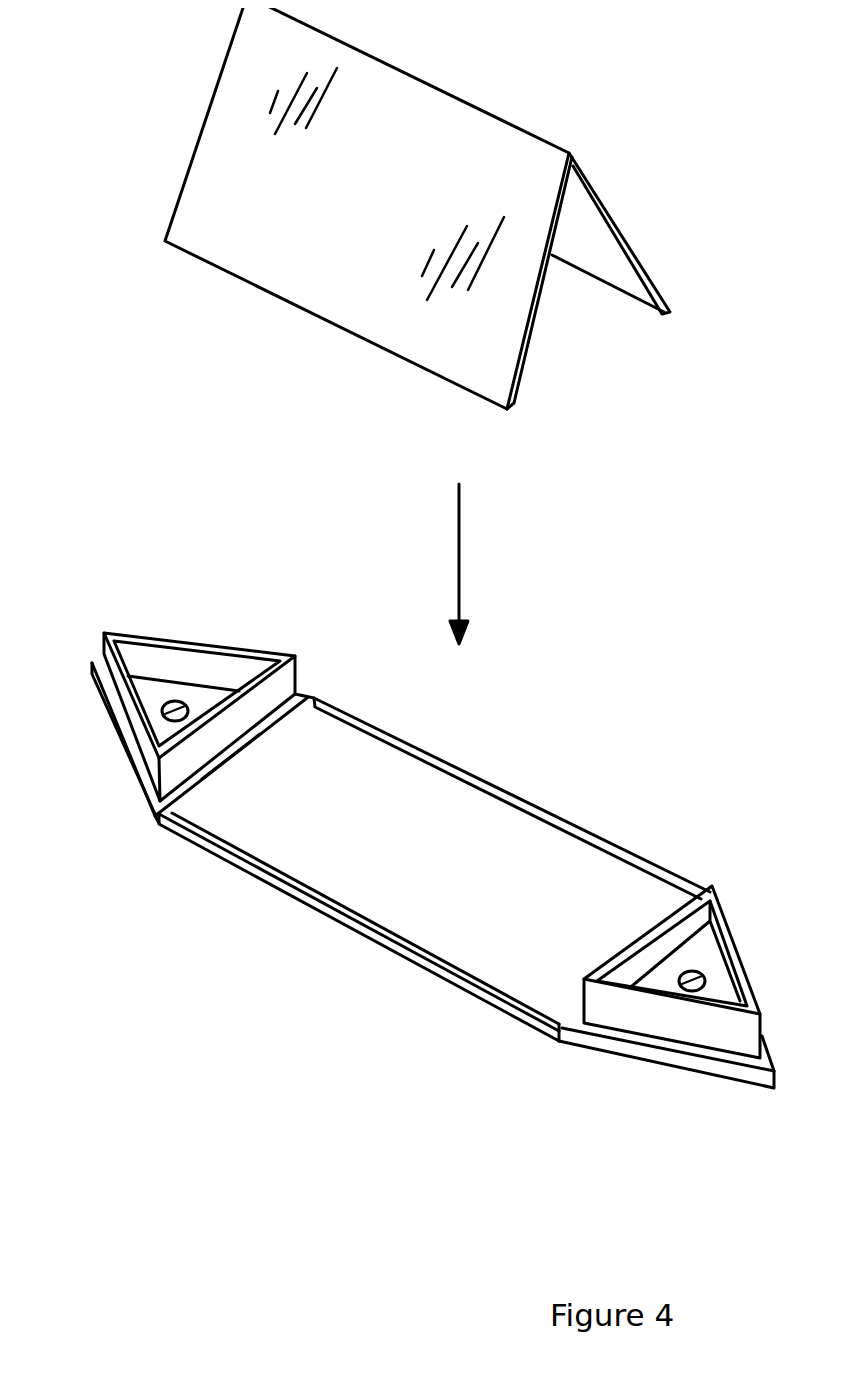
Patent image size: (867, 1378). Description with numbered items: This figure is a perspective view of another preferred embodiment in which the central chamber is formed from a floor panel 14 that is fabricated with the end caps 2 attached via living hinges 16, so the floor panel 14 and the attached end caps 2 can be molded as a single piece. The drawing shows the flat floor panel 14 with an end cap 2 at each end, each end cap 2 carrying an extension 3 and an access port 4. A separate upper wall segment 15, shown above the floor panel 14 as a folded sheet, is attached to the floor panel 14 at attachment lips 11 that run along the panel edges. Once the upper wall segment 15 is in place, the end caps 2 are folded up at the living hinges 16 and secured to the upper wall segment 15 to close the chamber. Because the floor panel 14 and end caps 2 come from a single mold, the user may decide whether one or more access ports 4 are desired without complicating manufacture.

The end cap 2 is at (107, 731).
The extension 3 is at (96, 646).
The access port 4 is at (166, 695).
The attachment lip 11 is at (429, 761).
The floor panel 14 is at (291, 853).
The upper wall segment 15 is at (272, 260).
The living hinge 16 is at (237, 736).